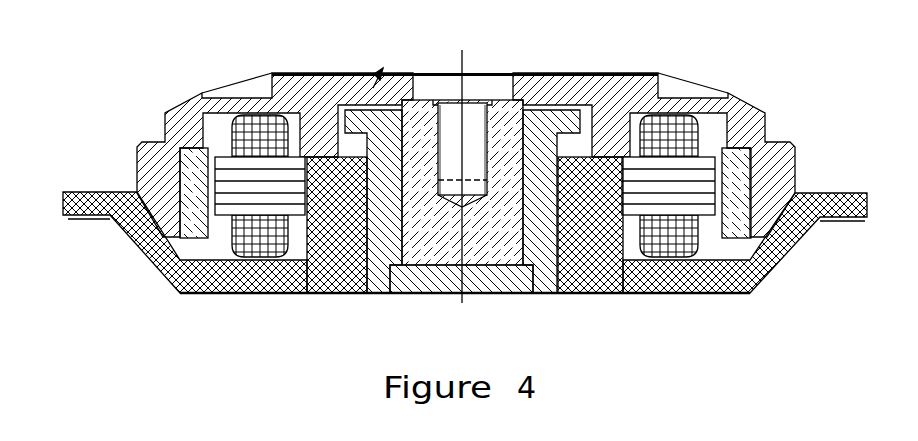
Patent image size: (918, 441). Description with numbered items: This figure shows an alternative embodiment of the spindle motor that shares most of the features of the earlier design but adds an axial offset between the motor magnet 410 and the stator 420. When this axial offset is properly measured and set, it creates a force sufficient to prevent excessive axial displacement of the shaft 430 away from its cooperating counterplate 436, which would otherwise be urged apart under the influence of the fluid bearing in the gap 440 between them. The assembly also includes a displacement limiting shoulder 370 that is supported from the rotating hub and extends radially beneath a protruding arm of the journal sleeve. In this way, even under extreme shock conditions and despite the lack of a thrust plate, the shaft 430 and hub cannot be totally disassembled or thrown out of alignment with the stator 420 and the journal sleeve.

The displacement limiting shoulder 370 is at (587, 138).
The motor magnet 410 is at (193, 200).
The stator 420 is at (263, 198).
The shaft 430 is at (536, 140).
The counterplate 436 is at (503, 285).
The gap 440 is at (479, 270).